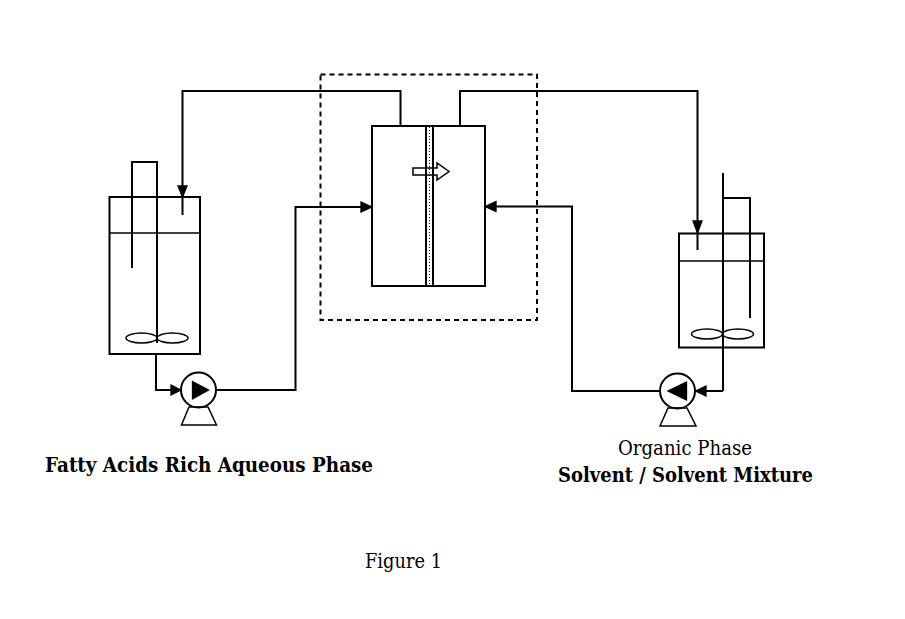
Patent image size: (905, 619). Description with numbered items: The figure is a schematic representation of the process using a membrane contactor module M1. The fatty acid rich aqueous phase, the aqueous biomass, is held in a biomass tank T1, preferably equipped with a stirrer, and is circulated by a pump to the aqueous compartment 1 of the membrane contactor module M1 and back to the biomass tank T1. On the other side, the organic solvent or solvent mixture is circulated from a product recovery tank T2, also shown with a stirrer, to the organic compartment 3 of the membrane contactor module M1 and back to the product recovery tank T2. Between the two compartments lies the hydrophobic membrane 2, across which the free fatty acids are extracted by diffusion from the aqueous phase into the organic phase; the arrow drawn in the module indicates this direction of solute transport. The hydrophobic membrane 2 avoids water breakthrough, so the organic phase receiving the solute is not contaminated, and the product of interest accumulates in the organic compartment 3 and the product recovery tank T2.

The aqueous compartment 1 is at (399, 206).
The hydrophobic membrane 2 is at (428, 300).
The organic compartment 3 is at (459, 206).
The membrane contactor module M1 is at (430, 166).
The biomass tank T1 is at (155, 258).
The product recovery tank T2 is at (721, 282).